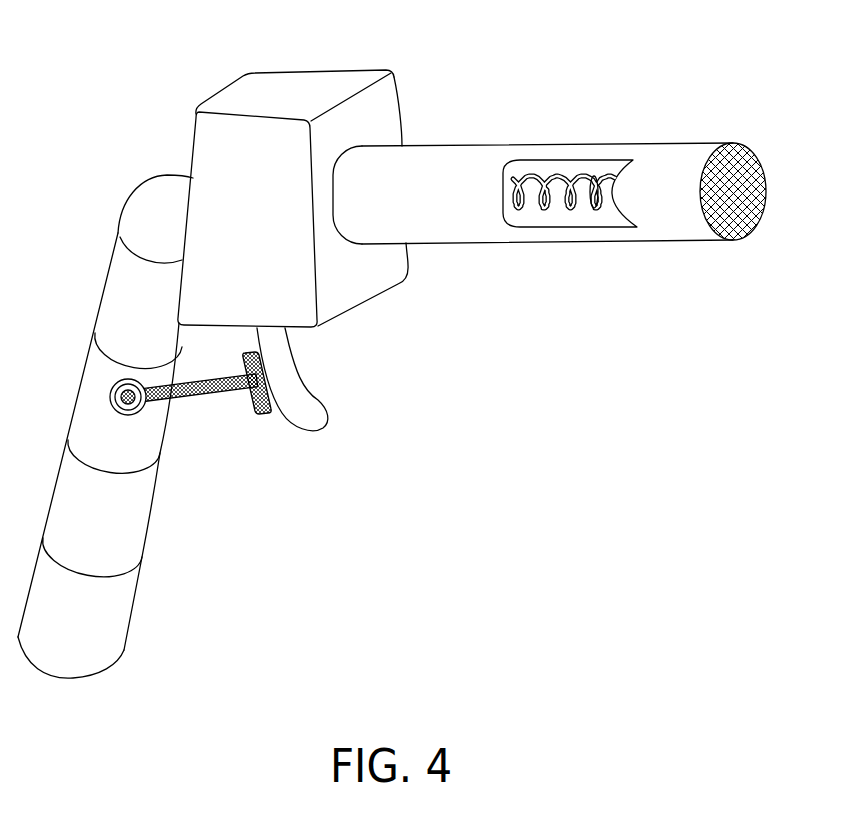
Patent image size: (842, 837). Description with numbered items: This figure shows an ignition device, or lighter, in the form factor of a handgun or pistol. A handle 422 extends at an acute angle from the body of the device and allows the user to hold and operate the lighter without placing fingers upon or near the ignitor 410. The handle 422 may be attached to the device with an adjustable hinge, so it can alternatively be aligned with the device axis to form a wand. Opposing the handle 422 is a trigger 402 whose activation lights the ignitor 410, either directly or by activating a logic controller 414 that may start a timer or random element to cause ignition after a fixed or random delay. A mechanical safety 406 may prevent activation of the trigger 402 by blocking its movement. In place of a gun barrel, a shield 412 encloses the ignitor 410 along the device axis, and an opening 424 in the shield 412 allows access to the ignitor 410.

The trigger 402 is at (344, 420).
The safety 406 is at (219, 421).
The ignitor 410 is at (567, 158).
The shield 412 is at (443, 155).
The logic controller 414 is at (374, 277).
The handle 422 is at (118, 189).
The opening 424 is at (601, 221).